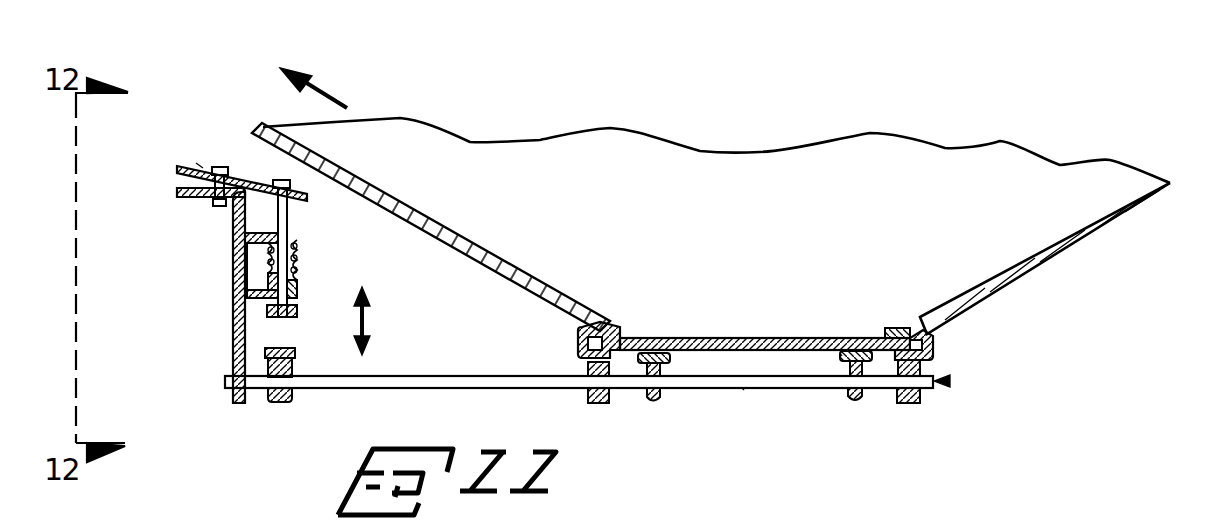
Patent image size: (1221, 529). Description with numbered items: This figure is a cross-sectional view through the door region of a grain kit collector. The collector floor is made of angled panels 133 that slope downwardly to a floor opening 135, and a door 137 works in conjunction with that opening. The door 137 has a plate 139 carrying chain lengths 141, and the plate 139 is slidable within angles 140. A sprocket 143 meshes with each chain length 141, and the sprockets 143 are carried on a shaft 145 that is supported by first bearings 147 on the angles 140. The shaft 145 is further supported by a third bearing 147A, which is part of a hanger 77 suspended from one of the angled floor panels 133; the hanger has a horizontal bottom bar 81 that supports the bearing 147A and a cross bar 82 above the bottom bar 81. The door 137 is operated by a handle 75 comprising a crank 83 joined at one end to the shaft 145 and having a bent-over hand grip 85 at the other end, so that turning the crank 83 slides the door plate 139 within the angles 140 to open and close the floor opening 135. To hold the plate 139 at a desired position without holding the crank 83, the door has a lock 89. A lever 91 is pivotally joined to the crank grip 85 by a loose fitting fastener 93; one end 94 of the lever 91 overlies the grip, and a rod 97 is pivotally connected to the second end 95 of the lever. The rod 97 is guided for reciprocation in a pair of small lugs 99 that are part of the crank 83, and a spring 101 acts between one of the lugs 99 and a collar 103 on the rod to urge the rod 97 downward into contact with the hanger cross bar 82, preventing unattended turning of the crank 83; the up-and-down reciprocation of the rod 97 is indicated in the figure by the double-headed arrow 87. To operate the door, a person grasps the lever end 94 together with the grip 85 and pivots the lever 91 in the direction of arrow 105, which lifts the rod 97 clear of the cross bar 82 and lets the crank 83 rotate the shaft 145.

The handle 75 is at (378, 389).
The hanger 77 is at (294, 360).
The horizontal bottom bar 81 is at (268, 351).
The cross bar 82 is at (276, 318).
The crank 83 is at (234, 306).
The hand grip 85 is at (180, 193).
The vertical movement arrow 87 is at (364, 320).
The lock 89 is at (200, 165).
The lever 91 is at (257, 180).
The loose fitting fastener 93 is at (223, 207).
The lever end 94 is at (178, 168).
The second end of the lever 95 is at (306, 200).
The rod 97 is at (284, 217).
The lugs 99 is at (253, 243).
The spring 101 is at (296, 258).
The collar 103 is at (302, 287).
The arrow 105 is at (322, 84).
The angled panels 133 is at (1048, 255).
The floor opening 135 is at (885, 331).
The door 137 is at (950, 382).
The plate 139 is at (720, 338).
The angles 140 is at (934, 344).
The chain lengths 141 is at (840, 354).
The sprocket 143 is at (653, 404).
The shaft 145 is at (742, 389).
The first bearings 147 is at (597, 404).
The third bearing 147A is at (278, 406).